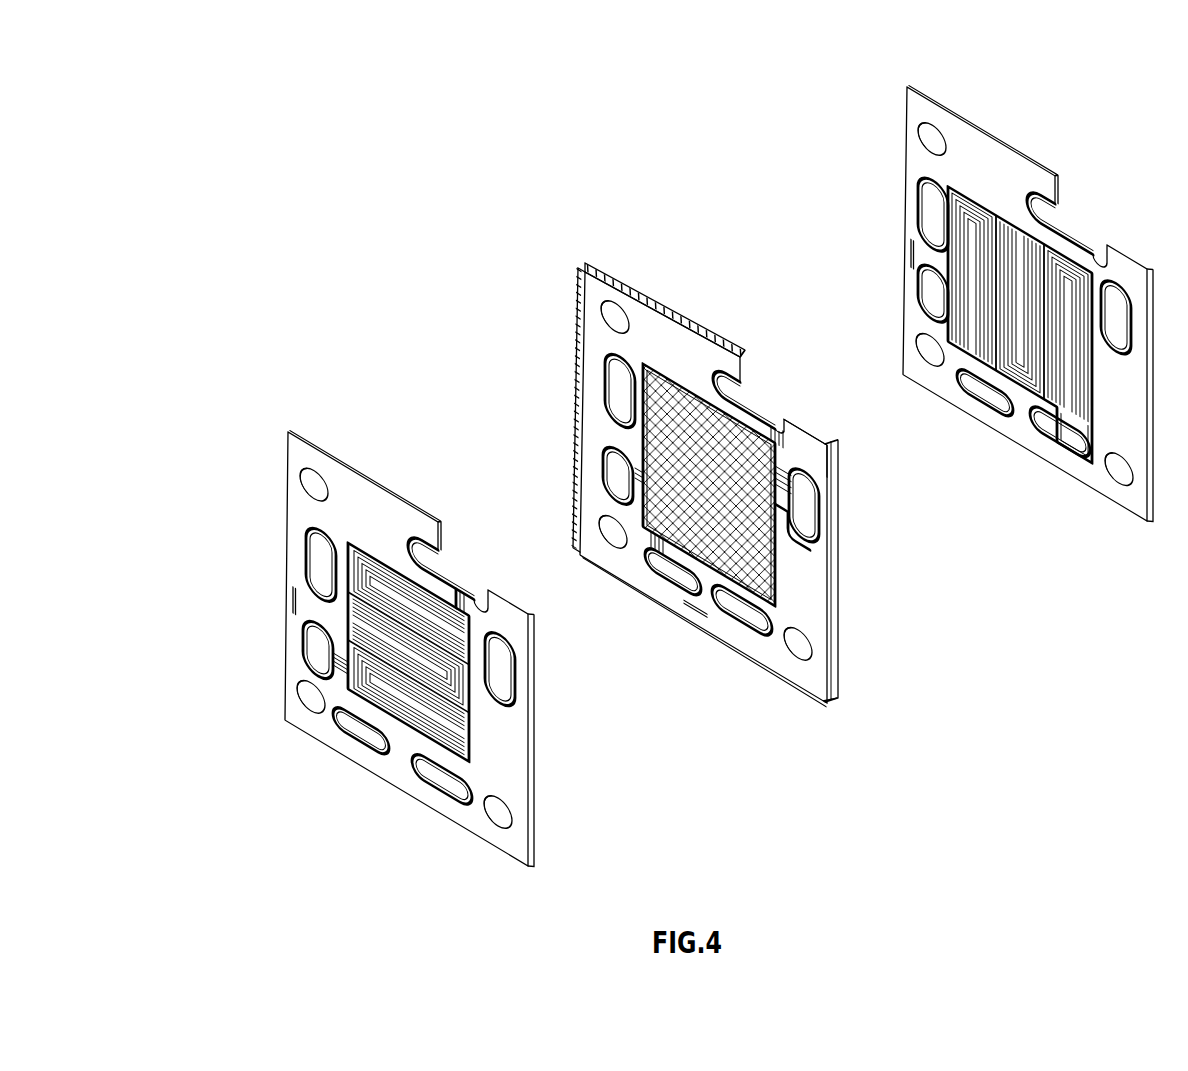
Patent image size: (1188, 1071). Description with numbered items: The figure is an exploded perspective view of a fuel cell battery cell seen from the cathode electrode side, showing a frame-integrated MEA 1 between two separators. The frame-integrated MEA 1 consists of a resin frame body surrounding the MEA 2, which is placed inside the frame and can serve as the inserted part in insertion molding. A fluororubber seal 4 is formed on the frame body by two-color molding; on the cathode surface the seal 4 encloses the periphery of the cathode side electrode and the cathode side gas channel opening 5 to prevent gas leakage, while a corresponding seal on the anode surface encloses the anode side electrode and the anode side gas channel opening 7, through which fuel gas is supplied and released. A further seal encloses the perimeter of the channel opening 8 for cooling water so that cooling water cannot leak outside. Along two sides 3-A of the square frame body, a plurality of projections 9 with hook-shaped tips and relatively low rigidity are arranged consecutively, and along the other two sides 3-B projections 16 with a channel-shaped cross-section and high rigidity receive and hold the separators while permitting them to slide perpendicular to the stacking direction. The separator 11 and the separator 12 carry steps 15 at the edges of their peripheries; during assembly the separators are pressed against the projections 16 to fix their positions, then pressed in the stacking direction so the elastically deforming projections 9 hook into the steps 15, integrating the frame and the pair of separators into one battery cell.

The frame-integrated MEA 1 is at (575, 407).
The MEA 2 is at (670, 373).
The seal 4 is at (807, 547).
The cathode side gas channel opening 5 is at (803, 493).
The anode side gas channel opening 7 is at (622, 385).
The channel opening for cooling water 8 is at (733, 387).
The projection 9 is at (742, 372).
The separator 11 is at (897, 178).
The separator 12 is at (273, 568).
The step 15 is at (290, 430).
The projection 16 is at (830, 444).
The side 3-A is at (584, 271).
The side 3-B is at (800, 694).